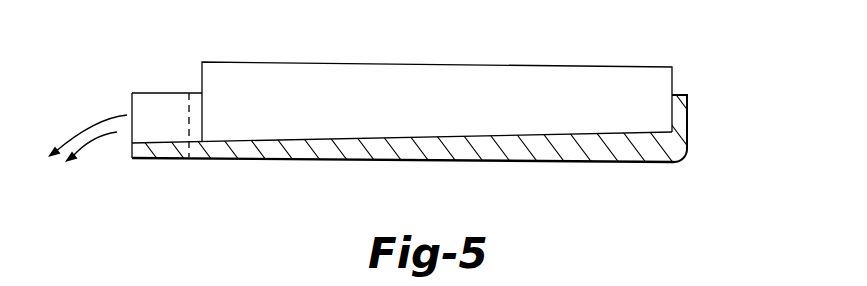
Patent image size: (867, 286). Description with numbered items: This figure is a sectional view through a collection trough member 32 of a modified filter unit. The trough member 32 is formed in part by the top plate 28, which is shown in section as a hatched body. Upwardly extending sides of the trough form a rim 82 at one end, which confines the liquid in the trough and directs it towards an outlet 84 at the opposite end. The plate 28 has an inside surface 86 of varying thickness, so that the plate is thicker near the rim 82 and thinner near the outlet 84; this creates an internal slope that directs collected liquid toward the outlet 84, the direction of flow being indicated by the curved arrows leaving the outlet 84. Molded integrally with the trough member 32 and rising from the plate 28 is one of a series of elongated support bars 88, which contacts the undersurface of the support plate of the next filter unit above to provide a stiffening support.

The top plate 28 is at (365, 152).
The collection trough member 32 is at (608, 162).
The rim 82 is at (687, 116).
The outlet 84 is at (161, 102).
The inside surface 86 is at (488, 135).
The elongated support bars 88 is at (265, 83).